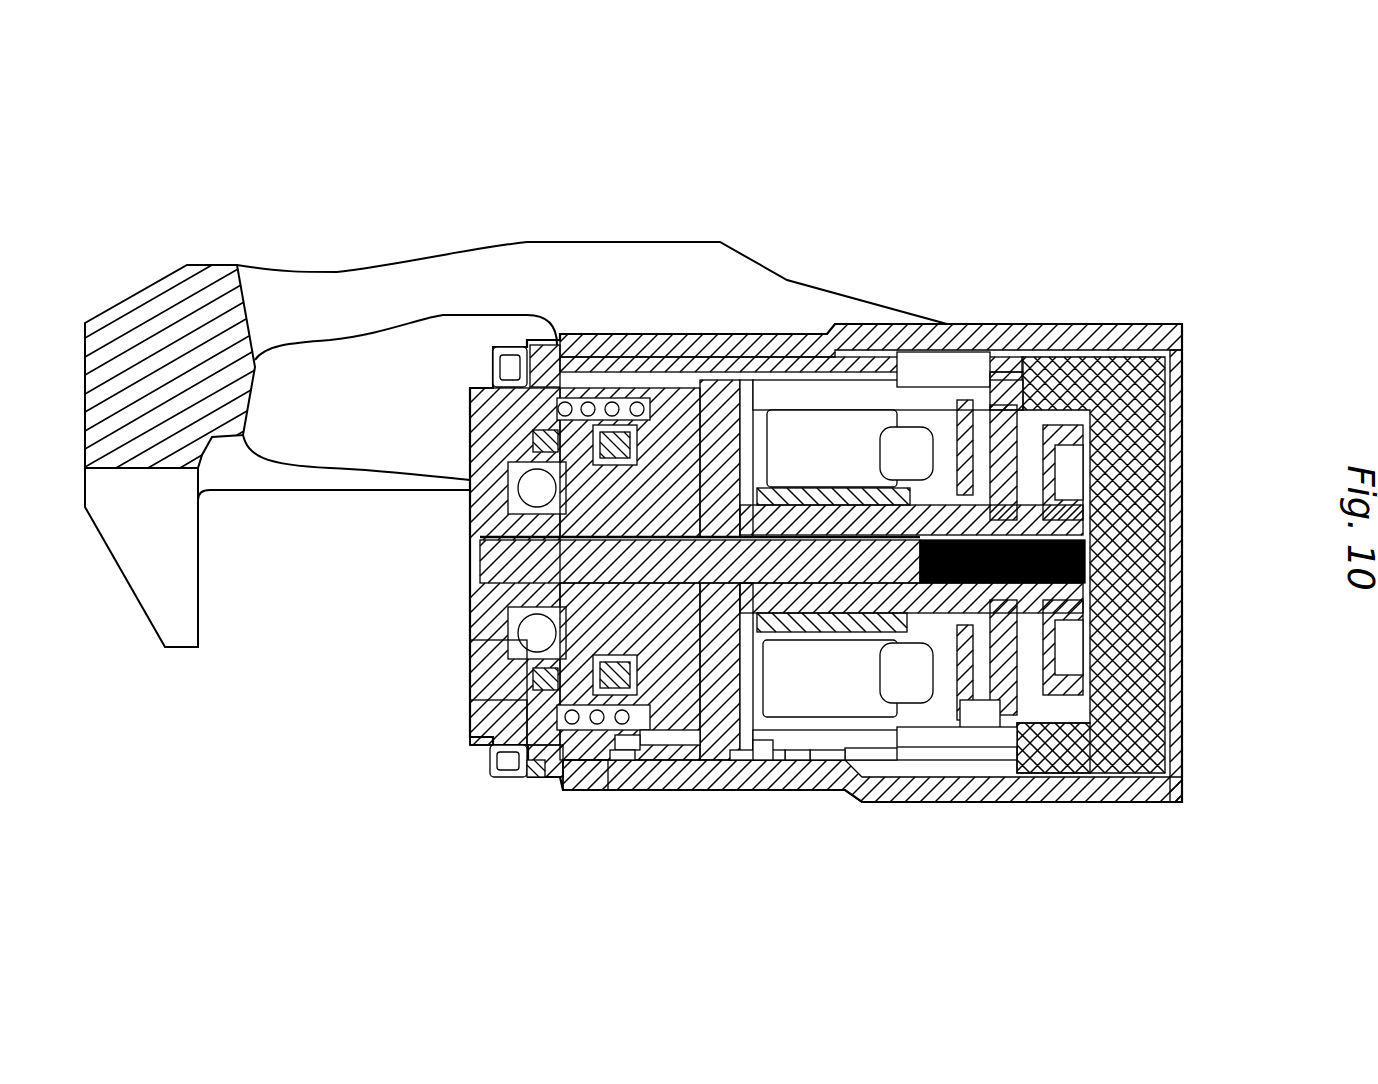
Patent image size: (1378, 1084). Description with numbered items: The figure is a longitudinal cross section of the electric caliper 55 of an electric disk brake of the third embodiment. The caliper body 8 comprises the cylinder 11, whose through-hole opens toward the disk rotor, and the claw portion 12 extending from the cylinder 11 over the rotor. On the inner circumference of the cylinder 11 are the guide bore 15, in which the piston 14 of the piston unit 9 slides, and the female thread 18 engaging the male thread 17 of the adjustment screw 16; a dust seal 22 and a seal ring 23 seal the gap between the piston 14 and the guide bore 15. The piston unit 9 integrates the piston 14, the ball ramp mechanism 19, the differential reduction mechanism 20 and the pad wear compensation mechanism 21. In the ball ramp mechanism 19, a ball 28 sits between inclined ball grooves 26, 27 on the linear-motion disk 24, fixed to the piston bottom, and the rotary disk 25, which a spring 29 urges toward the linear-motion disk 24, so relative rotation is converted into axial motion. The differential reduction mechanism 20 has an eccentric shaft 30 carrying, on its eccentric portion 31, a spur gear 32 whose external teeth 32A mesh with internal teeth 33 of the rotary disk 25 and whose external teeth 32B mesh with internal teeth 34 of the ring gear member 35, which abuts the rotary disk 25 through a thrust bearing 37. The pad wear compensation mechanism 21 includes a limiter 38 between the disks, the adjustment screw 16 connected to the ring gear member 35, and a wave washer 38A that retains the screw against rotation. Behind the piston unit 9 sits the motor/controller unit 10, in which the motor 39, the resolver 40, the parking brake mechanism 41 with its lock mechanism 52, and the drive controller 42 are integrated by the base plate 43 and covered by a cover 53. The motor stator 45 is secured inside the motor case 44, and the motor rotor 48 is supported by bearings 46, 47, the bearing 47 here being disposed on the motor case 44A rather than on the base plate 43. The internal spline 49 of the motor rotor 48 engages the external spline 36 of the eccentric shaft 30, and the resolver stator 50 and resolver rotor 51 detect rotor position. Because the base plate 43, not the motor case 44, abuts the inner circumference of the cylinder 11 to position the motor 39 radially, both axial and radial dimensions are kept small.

The caliper body 8 is at (780, 337).
The piston unit 9 is at (645, 737).
The motor/controller unit 10 is at (1142, 298).
The cylinder 11 is at (810, 337).
The claw portion 12 is at (147, 565).
The piston 14 is at (470, 675).
The guide bore 15 is at (602, 779).
The adjustment screw 16 is at (738, 762).
The male thread 17 is at (818, 762).
The female thread 18 is at (768, 762).
The ball ramp mechanism 19 is at (475, 652).
The differential reduction mechanism 20 is at (648, 400).
The pad wear compensation mechanism 21 is at (478, 398).
The dust seal 22 is at (488, 757).
The seal ring 23 is at (532, 777).
The linear-motion disk 24 is at (475, 490).
The rotary disk 25 is at (470, 418).
The ball groove 26 is at (475, 627).
The ball groove 27 is at (475, 720).
The ball 28 is at (475, 512).
The spring 29 is at (580, 390).
The eccentric shaft 30 is at (475, 583).
The eccentric portion 31 is at (500, 556).
The spur gear 32 is at (688, 400).
The external teeth 32A is at (623, 757).
The external teeth 32B is at (630, 743).
The internal teeth 33 is at (614, 400).
The internal teeth 34 is at (750, 350).
The ring gear member 35 is at (702, 345).
The external spline 36 is at (1130, 535).
The thrust bearing 37 is at (625, 420).
The limiter 38 is at (540, 347).
The wave washer 38A is at (758, 765).
The motor 39 is at (848, 755).
The resolver 40 is at (1174, 402).
The parking brake mechanism 41 is at (970, 742).
The drive controller 42 is at (1175, 372).
The base plate 43 is at (1010, 352).
The motor case 44 is at (915, 370).
The motor case 44A is at (927, 750).
The motor stator 45 is at (875, 370).
The bearing 46 is at (850, 430).
The bearing 47 is at (1100, 463).
The motor rotor 48 is at (794, 762).
The internal spline 49 is at (1085, 560).
The resolver stator 50 is at (1083, 668).
The resolver rotor 51 is at (1085, 615).
The lock mechanism 52 is at (1048, 758).
The cover 53 is at (1184, 788).
The electric caliper 55 is at (924, 170).